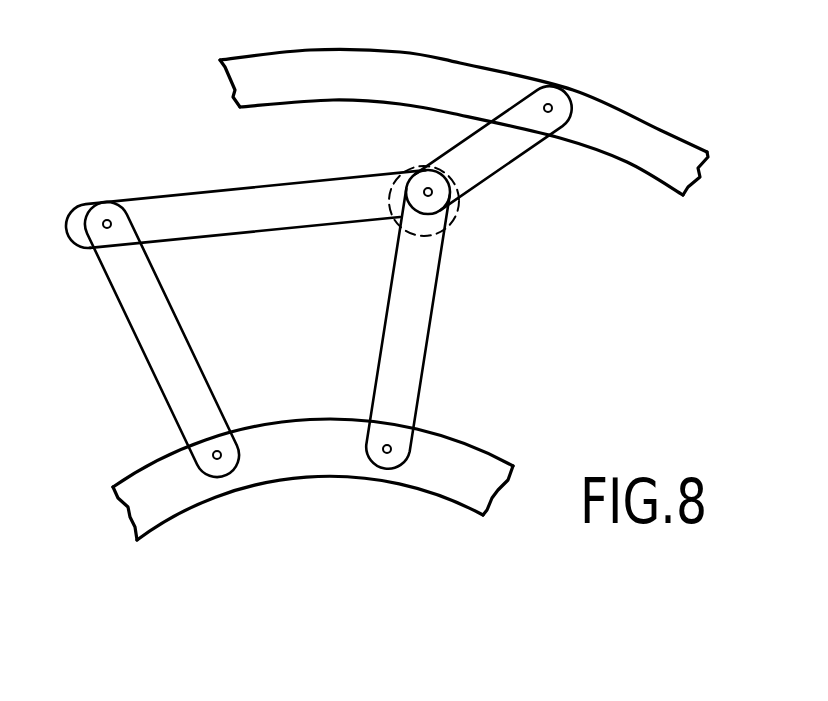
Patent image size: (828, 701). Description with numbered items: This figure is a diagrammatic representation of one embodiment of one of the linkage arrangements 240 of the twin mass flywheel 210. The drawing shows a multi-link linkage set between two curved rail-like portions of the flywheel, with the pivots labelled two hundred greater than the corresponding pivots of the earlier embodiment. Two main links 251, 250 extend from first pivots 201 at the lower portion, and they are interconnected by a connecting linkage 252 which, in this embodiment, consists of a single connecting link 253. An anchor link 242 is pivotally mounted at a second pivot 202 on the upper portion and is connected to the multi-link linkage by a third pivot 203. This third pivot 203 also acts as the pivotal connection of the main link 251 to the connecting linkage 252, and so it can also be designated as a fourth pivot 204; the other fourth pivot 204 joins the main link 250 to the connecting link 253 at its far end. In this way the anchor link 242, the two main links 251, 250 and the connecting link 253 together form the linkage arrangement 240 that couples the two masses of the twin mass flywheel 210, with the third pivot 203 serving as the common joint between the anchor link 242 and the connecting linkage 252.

The first pivot 201 is at (386, 447).
The second pivot 202 is at (550, 105).
The third pivot 203 is at (431, 195).
The fourth pivot 204 is at (106, 220).
The twin mass flywheel 210 is at (397, 67).
The linkage arrangement 240 is at (479, 289).
The anchor link 242 is at (503, 148).
The main link 250 is at (139, 310).
The main link 251 is at (422, 337).
The connecting linkage 252 is at (218, 178).
The connecting link 253 is at (325, 182).